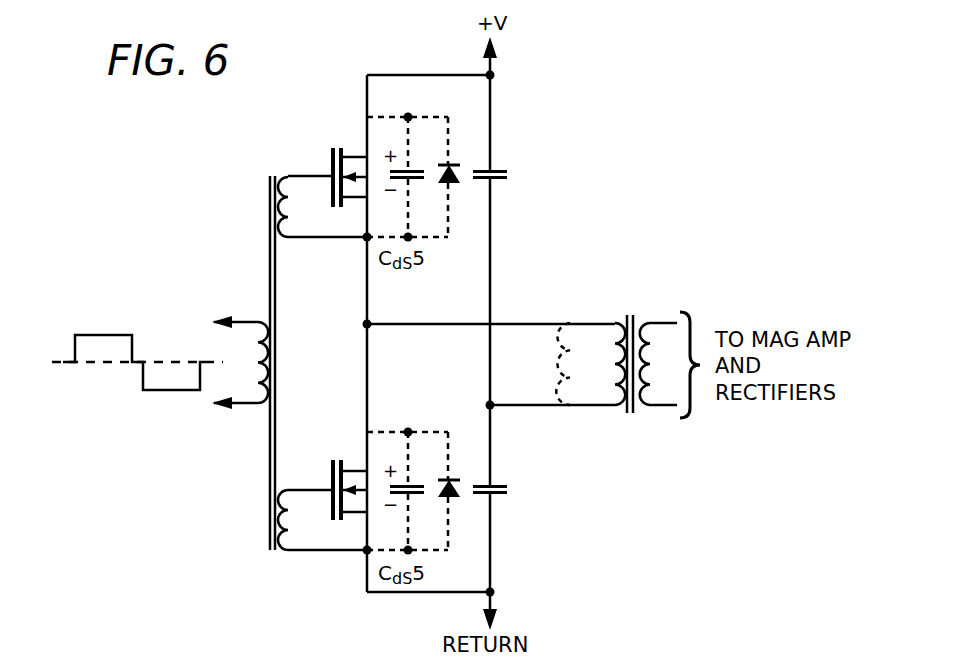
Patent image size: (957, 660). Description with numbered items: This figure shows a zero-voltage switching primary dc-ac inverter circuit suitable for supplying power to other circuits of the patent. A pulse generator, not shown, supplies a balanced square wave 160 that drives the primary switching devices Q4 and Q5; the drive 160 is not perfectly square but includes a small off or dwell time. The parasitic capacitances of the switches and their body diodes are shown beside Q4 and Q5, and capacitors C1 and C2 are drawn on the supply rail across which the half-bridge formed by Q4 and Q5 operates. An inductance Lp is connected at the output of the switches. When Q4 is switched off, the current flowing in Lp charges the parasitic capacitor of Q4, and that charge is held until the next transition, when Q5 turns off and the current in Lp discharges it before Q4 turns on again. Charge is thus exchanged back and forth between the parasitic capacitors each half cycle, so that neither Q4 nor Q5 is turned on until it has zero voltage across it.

The balanced square wave 160 is at (100, 335).
The primary switching device Q4 is at (322, 191).
The primary switching device Q5 is at (322, 504).
The capacitor C1 is at (506, 176).
The capacitor C2 is at (506, 491).
The inductance Lp is at (547, 364).